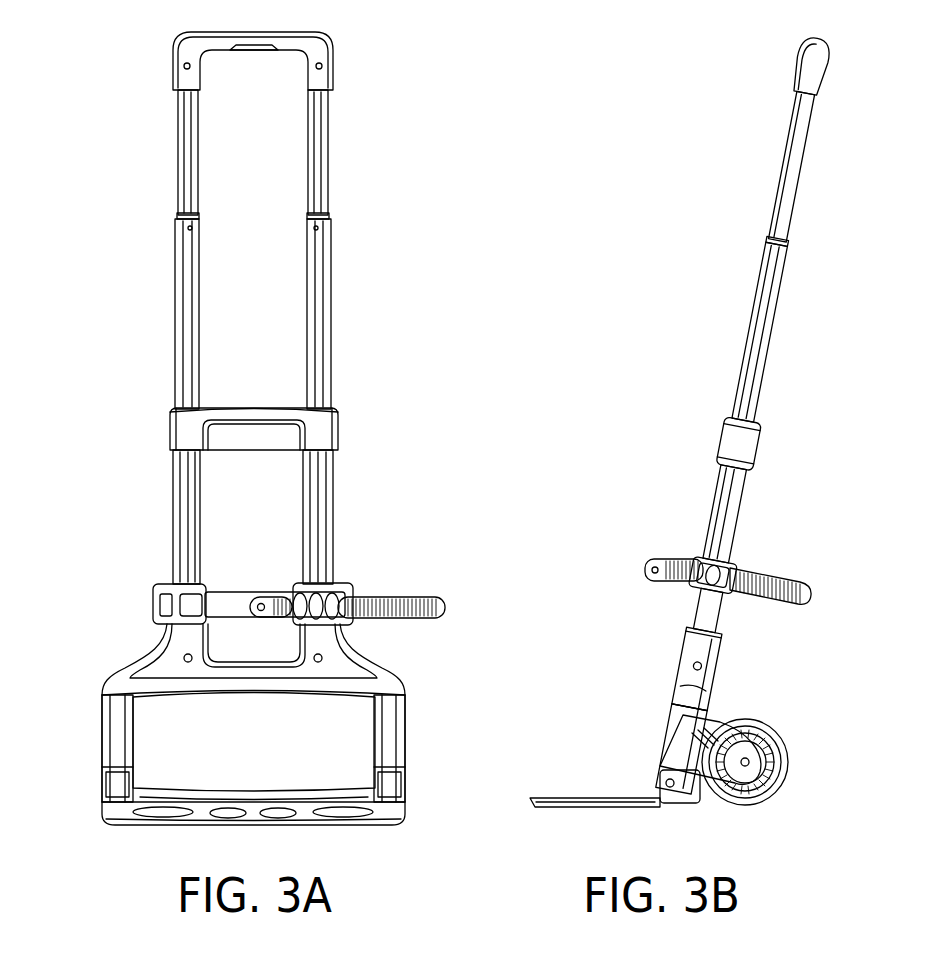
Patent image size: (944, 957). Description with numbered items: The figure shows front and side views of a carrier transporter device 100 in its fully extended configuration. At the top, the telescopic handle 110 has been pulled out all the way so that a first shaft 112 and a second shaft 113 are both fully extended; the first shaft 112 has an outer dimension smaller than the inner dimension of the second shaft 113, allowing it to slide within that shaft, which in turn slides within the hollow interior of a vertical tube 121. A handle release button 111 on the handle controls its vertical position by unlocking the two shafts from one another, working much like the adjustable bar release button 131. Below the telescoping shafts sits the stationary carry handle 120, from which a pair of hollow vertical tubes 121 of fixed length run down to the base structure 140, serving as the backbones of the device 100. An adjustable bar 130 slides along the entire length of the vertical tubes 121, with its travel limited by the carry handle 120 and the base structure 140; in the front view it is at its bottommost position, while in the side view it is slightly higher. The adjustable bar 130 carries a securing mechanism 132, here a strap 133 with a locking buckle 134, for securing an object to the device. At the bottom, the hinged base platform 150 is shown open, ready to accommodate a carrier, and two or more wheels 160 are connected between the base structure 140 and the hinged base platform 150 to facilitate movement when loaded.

In FIG. 3A, the retractable carrier transporter device assembly 100 is at (86, 84).
In FIG. 3B, the retractable carrier transporter device assembly 100 is at (636, 134).
In FIG. 3A, the telescopic handle 110 is at (178, 50).
In FIG. 3B, the telescopic handle 110 is at (800, 62).
In FIG. 3A, the handle release button 111 is at (260, 53).
In FIG. 3A, the first shaft 112 is at (178, 163).
In FIG. 3B, the first shaft 112 is at (785, 175).
In FIG. 3A, the second shaft 113 is at (178, 315).
In FIG. 3B, the second shaft 113 is at (755, 333).
In FIG. 3A, the stationary carry handle 120 is at (170, 428).
In FIG. 3B, the stationary carry handle 120 is at (722, 440).
In FIG. 3A, the hollow vertical tubes 121 is at (175, 522).
In FIG. 3B, the hollow vertical tubes 121 is at (717, 512).
In FIG. 3A, the adjustable bar 130 is at (153, 588).
In FIG. 3B, the adjustable bar 130 is at (700, 556).
In FIG. 3A, the adjustable bar release button 131 is at (260, 594).
In FIG. 3A, the securing mechanism 132 is at (153, 605).
In FIG. 3A, the strap 133 is at (360, 600).
In FIG. 3B, the strap 133 is at (744, 578).
In FIG. 3A, the locking buckle 134 is at (330, 600).
In FIG. 3B, the locking buckle 134 is at (707, 576).
In FIG. 3A, the base structure 140 is at (135, 660).
In FIG. 3B, the base structure 140 is at (687, 660).
In FIG. 3A, the hinged base platform 150 is at (157, 827).
In FIG. 3B, the hinged base platform 150 is at (620, 797).
In FIG. 3B, the wheels 160 is at (757, 722).